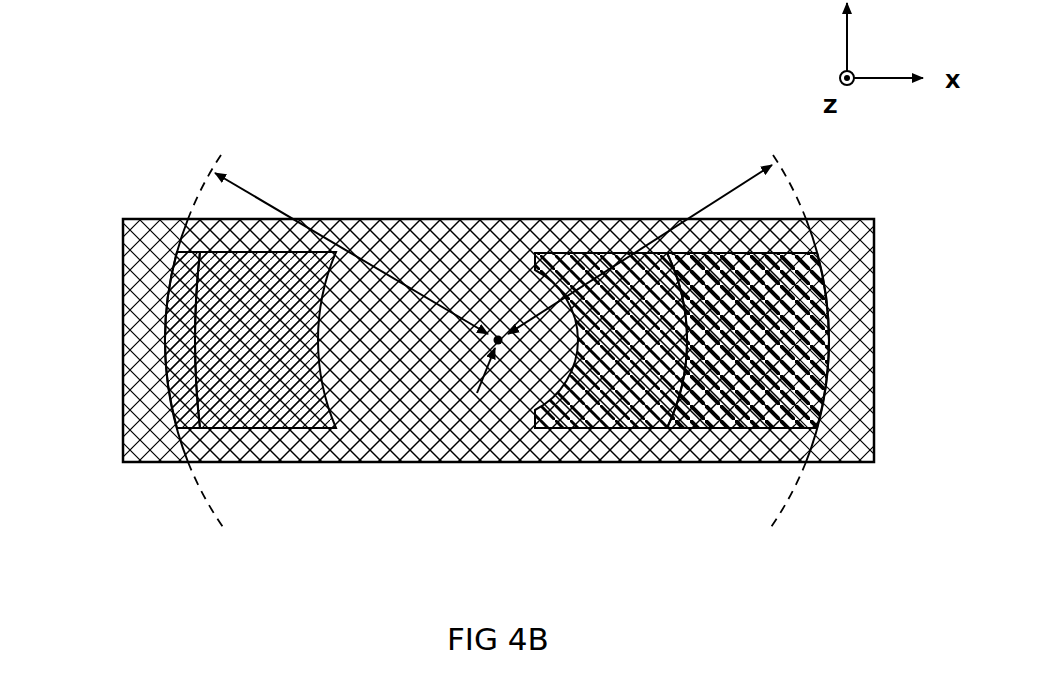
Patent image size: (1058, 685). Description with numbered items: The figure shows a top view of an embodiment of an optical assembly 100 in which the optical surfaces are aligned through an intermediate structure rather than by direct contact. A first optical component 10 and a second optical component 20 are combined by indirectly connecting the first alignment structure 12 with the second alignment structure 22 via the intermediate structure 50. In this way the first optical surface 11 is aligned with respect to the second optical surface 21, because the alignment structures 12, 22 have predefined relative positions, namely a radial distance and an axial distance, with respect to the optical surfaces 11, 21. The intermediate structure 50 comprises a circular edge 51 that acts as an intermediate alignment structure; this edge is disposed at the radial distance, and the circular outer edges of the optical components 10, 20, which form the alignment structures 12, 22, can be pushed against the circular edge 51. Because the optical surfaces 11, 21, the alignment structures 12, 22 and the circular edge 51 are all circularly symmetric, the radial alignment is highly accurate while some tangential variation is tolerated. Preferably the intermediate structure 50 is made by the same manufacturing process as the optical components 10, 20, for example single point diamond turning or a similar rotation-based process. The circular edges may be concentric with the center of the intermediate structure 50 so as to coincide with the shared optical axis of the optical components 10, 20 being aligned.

The optical assembly 100 is at (153, 106).
The intermediate structure 50 is at (150, 233).
The circular edge 51 is at (187, 442).
The first optical component 10 is at (178, 337).
The first optical surface 11 is at (275, 351).
The first alignment structure 12 is at (168, 415).
The second optical component 20 is at (792, 337).
The second optical surface 21 is at (633, 354).
The second alignment structure 22 is at (825, 413).